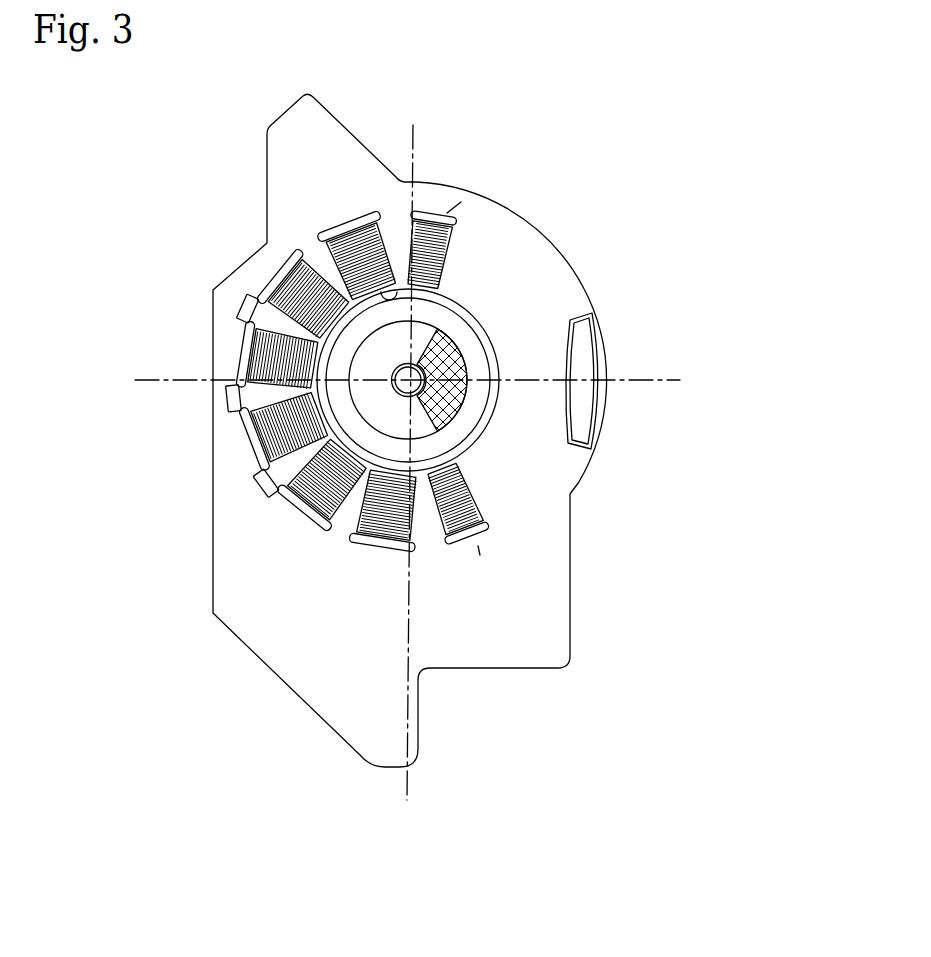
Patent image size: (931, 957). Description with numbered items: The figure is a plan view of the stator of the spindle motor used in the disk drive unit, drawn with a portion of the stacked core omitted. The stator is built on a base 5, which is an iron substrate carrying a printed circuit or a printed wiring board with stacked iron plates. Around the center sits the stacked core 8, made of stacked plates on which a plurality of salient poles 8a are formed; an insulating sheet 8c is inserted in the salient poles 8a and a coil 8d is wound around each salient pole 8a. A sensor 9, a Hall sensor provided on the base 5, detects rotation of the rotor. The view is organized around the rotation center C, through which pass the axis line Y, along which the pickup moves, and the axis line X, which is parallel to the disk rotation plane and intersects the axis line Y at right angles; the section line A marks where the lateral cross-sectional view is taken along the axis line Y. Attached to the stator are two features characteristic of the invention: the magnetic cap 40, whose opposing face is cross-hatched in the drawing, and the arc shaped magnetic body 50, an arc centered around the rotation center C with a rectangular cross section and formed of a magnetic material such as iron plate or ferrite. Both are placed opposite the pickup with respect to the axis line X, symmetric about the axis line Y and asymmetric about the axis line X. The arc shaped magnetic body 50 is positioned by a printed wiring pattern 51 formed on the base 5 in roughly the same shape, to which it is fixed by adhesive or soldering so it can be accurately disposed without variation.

The base 5 is at (608, 408).
The stacked core 8 is at (337, 419).
The salient pole 8a is at (239, 228).
The insulating sheet 8c is at (395, 280).
The coil 8d is at (320, 280).
The sensor 9 is at (222, 400).
The magnetic cap 40 is at (450, 420).
The arc shaped magnetic body 50 is at (592, 370).
The printed wiring pattern 51 is at (577, 317).
The rotation center C is at (402, 396).
The axis line X is at (427, 459).
The axis line Y is at (407, 351).
The line A- A is at (68, 283).